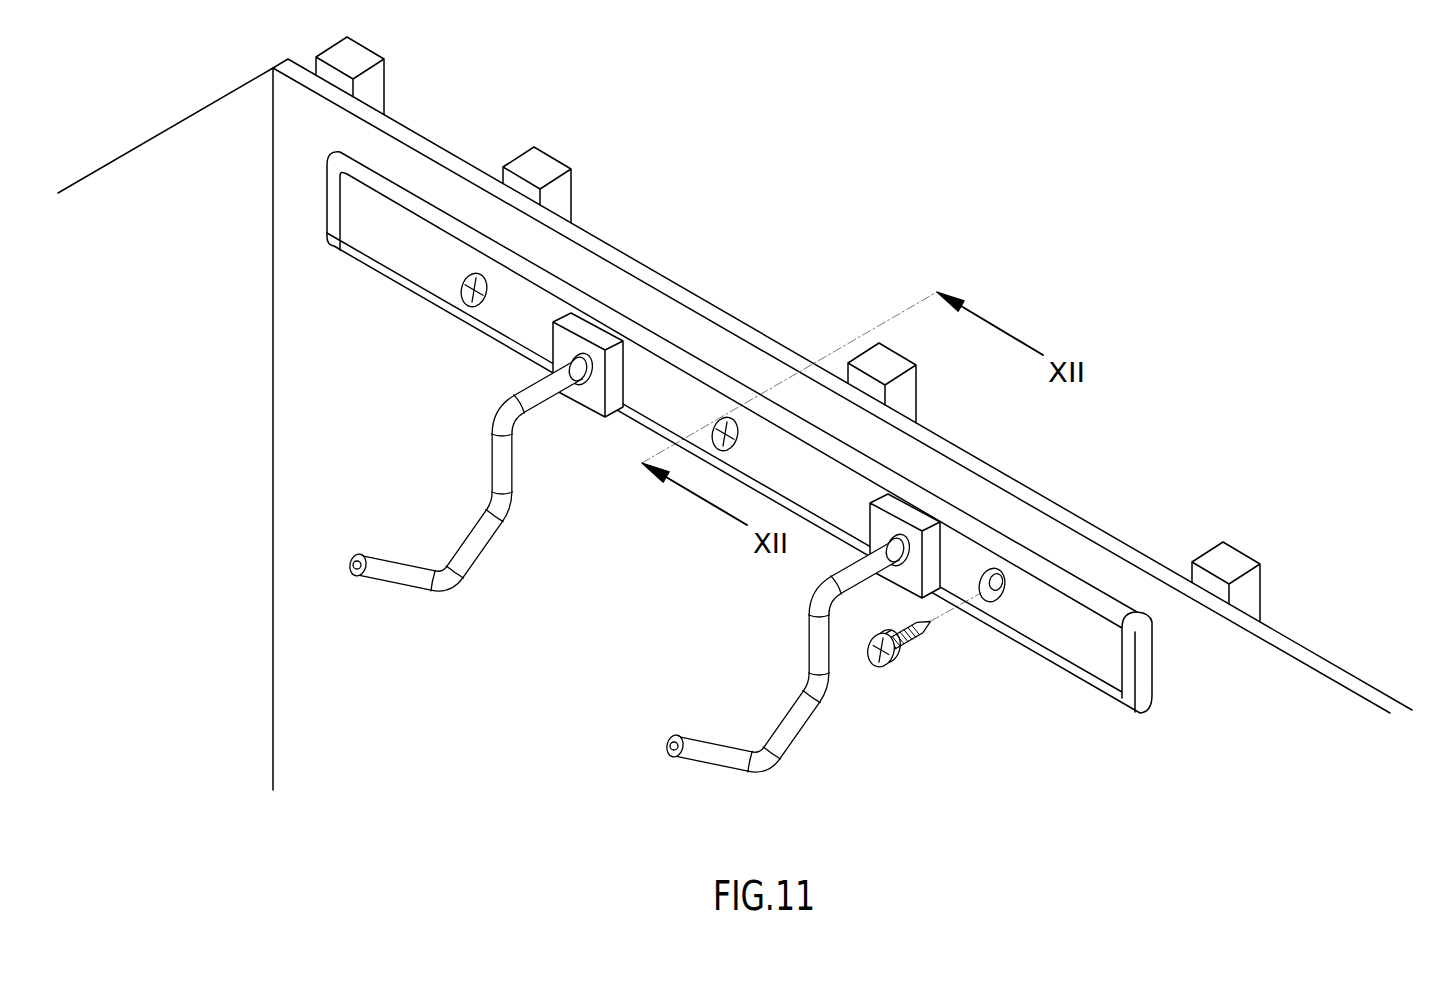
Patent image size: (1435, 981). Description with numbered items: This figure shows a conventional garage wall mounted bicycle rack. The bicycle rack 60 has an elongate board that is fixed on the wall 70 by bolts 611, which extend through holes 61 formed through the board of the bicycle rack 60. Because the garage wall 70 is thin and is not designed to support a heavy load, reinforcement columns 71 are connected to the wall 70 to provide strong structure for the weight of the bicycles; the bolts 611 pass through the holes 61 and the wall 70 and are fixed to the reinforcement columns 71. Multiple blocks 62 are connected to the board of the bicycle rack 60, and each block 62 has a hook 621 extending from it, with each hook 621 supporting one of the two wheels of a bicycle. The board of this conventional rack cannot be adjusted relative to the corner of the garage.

The wall 70 is at (772, 338).
The reinforcement column 71 is at (550, 165).
The bicycle rack 60 is at (896, 466).
The hole 61 is at (995, 571).
The block 62 is at (462, 502).
The bolt 611 is at (467, 291).
The hook 621 is at (412, 583).